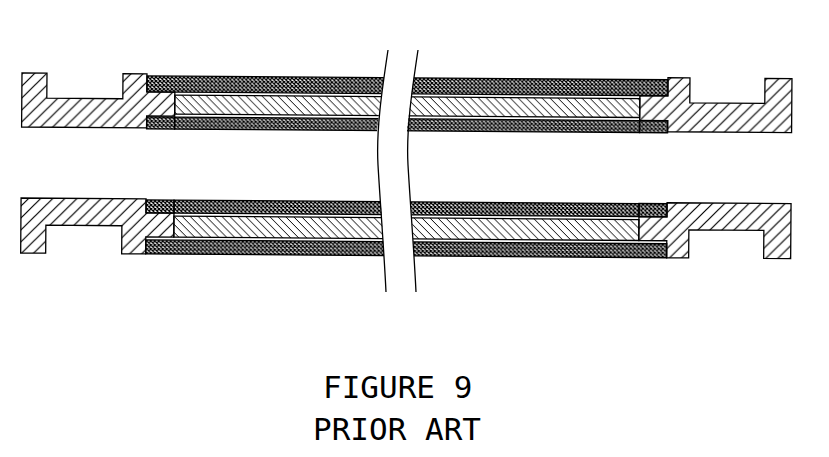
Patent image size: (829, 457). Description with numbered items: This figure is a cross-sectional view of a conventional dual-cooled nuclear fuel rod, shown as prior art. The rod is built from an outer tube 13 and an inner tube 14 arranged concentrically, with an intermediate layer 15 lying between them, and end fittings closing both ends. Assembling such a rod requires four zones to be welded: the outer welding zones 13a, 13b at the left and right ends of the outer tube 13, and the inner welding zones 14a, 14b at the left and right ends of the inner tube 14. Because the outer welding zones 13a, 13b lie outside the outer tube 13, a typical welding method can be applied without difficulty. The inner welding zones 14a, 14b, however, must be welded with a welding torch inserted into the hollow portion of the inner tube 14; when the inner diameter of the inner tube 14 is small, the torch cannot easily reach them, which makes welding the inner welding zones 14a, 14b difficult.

The outer tube 13 is at (243, 73).
The outer welding zone 13a is at (147, 73).
The outer welding zone 13b is at (670, 79).
The inner tube 14 is at (462, 128).
The inner welding zone 14a is at (147, 127).
The inner welding zone 14b is at (668, 132).
The intermediate hatched layer 15 is at (258, 128).